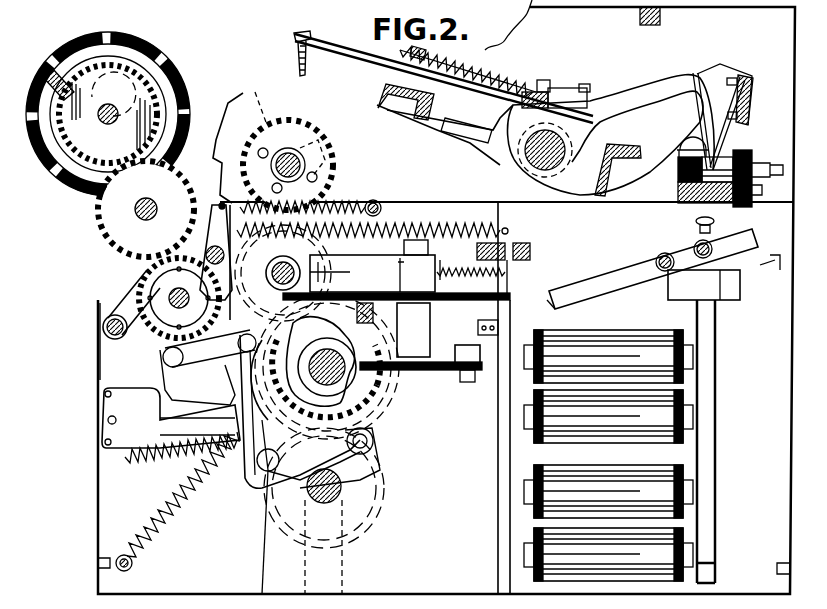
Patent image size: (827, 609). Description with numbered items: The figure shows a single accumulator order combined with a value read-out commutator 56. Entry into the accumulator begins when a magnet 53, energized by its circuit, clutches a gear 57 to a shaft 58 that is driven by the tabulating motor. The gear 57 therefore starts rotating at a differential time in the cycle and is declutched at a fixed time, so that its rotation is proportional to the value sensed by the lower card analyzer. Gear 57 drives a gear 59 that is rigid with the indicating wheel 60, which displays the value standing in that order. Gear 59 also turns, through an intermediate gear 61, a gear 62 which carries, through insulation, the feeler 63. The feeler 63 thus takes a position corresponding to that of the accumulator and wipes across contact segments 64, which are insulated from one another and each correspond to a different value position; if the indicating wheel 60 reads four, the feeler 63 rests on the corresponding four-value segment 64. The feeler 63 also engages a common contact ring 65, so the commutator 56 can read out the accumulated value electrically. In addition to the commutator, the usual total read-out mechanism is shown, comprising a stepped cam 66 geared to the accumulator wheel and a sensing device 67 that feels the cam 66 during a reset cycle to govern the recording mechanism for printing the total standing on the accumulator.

The magnet 53 is at (600, 395).
The read-out commutator 56 is at (111, 32).
The gear 57 is at (335, 206).
The shaft 58 is at (273, 273).
The gear 59 is at (113, 337).
The indicating wheel 60 is at (128, 276).
The intermediate gear 61 is at (118, 231).
The gear 62 is at (93, 140).
The feeler 63 is at (68, 96).
The contact segments 64 is at (80, 42).
The common contact ring 65 is at (50, 137).
The stepped cam 66 is at (243, 93).
The sensing device 67 is at (378, 58).